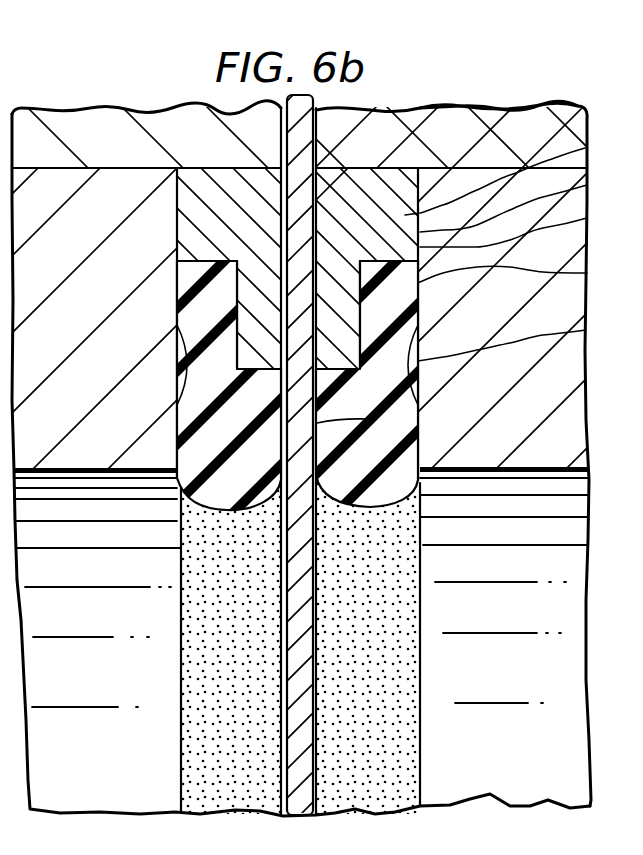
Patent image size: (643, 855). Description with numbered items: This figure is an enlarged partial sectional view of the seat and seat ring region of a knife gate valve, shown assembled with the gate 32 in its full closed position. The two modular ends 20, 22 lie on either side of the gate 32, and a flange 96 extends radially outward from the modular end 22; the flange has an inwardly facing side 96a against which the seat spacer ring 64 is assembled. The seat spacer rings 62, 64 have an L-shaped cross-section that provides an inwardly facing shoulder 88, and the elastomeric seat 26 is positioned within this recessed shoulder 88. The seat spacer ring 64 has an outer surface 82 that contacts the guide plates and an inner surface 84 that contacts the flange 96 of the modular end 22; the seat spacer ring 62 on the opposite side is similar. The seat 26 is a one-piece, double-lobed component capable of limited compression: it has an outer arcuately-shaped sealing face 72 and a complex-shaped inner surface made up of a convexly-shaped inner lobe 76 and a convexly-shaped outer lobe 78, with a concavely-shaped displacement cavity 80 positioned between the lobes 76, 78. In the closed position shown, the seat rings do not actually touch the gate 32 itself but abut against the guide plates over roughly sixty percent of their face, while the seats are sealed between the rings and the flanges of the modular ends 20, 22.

The modular end 20 is at (85, 763).
The modular end 22 is at (485, 763).
The seat 26 is at (372, 465).
The film 32 is at (303, 108).
The seat spacer ring 62 is at (195, 184).
The seat spacer ring 64 is at (585, 148).
The sealing face 72 is at (420, 402).
The inner lobe 76 is at (587, 273).
The outer lobe 78 is at (420, 442).
The displacement cavity 80 is at (586, 330).
The outer surface 82 is at (437, 106).
The inner surface 84 is at (587, 185).
The shoulder 88 is at (587, 218).
The flange 96 is at (479, 315).
The inwardly facing side 96a is at (502, 106).